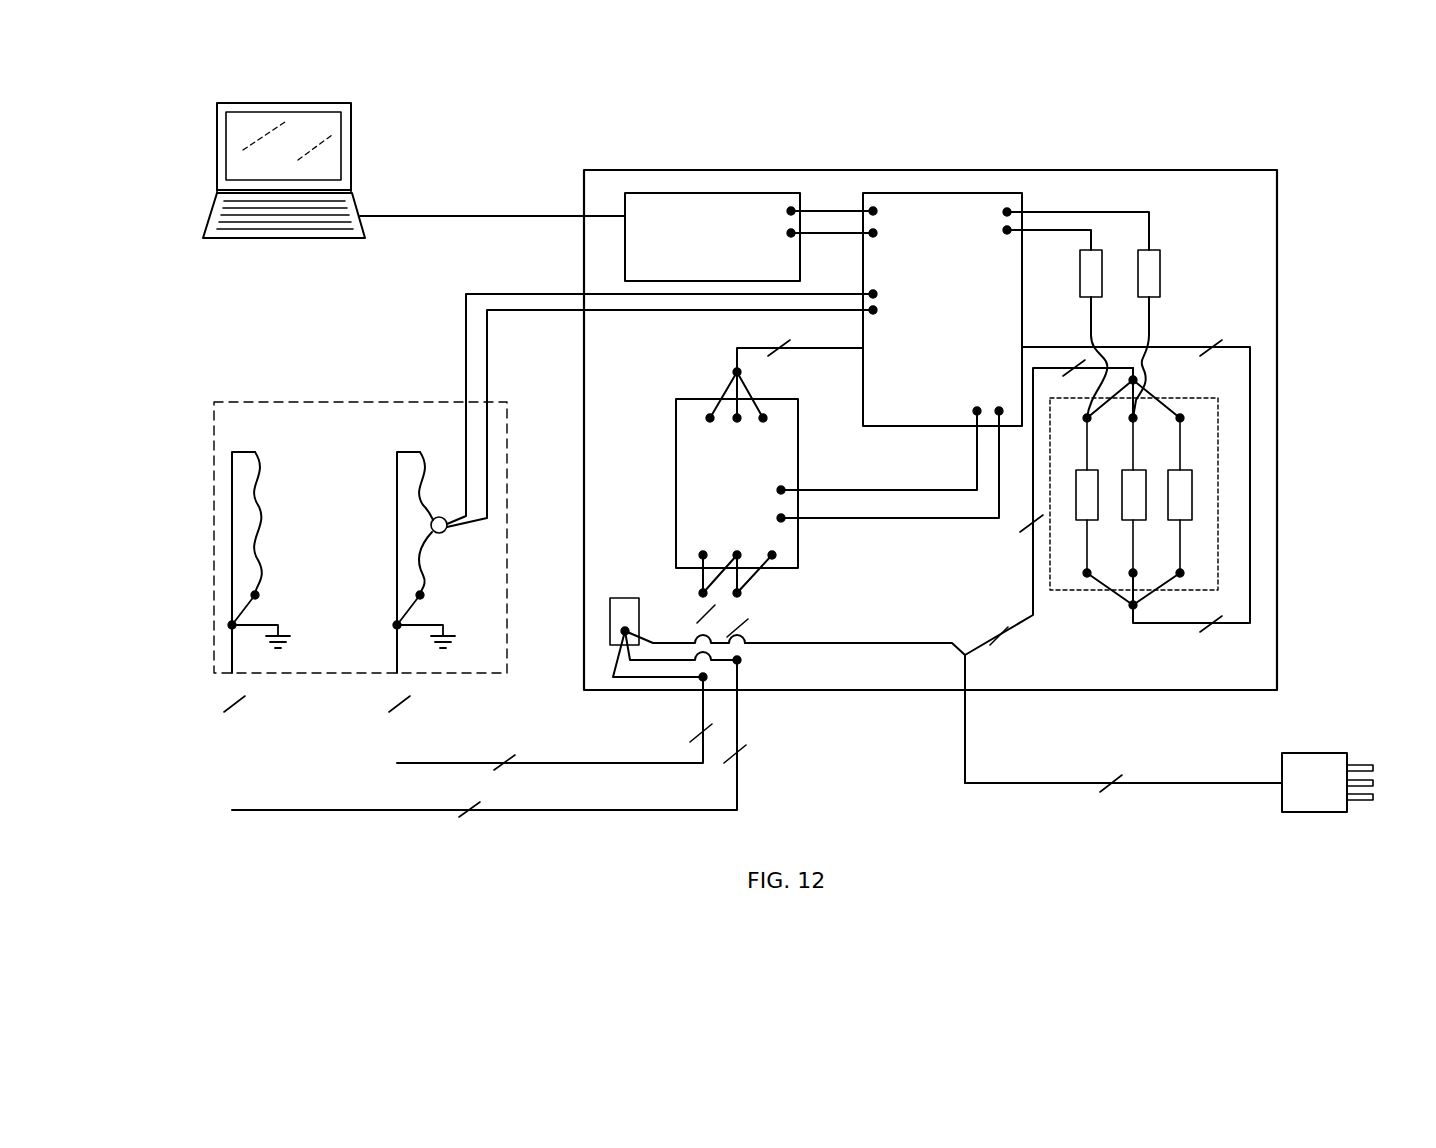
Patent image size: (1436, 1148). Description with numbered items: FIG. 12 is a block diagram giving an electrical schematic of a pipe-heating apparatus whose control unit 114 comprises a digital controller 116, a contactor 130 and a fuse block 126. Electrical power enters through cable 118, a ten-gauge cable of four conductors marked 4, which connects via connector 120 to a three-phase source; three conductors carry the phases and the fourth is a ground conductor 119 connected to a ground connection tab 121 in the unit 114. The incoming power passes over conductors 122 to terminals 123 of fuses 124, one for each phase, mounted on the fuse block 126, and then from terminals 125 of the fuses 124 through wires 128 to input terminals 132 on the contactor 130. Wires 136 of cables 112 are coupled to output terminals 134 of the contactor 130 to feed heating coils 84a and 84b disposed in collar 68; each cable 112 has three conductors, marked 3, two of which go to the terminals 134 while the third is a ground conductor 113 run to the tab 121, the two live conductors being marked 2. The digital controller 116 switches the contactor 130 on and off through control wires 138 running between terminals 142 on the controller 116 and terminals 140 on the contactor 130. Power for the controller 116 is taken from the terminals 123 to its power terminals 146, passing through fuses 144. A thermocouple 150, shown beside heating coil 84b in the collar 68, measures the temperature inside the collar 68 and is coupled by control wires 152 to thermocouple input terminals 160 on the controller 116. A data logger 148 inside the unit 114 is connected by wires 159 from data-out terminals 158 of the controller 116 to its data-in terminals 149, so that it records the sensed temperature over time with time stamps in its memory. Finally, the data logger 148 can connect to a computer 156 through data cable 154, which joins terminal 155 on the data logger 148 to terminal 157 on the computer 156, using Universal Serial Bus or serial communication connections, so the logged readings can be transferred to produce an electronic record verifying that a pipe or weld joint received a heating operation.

The computer 156 is at (354, 130).
The terminal 157 is at (358, 203).
The data cable 154 is at (478, 214).
The terminal 155 is at (612, 206).
The control unit 114 is at (1280, 262).
The data logger 148 is at (677, 226).
The data-in terminals 149 is at (784, 222).
The wires 159 is at (827, 210).
The data-out terminals 158 is at (880, 222).
The digital controller 116 is at (945, 228).
The power terminals 146 is at (1012, 218).
The fuses 144 is at (1090, 265).
The thermocouple input terminals 160 is at (880, 303).
The control wires 152 is at (530, 313).
The thermocouple 150 is at (447, 535).
The collar 68 is at (337, 402).
The heating coil 84a is at (265, 473).
The heating coil 84b is at (432, 475).
The contactor 130 is at (690, 478).
The input terminals 132 is at (720, 424).
The terminals 140 is at (776, 500).
The control wires 138 is at (890, 520).
The terminals 142 is at (988, 410).
The output terminals 134 is at (755, 560).
The wires 136 is at (745, 605).
The ground connection tab 121 is at (622, 610).
The ground conductors 113 is at (646, 670).
The ground conductor 119 is at (865, 646).
The cable 118 is at (1165, 785).
The connector 120 is at (1318, 800).
The conductors 122 is at (1033, 600).
The wires 128 is at (1255, 605).
The terminals 123 is at (1185, 420).
The fuses 124 is at (1195, 490).
The fuse block 126 is at (1198, 535).
The terminals 125 is at (1185, 573).
The cables 112 is at (575, 768).
The three-conductor cable marker 3 is at (723, 568).
The two-conductor cable marker 2 is at (724, 623).
The four-conductor cable marker 4 is at (1111, 775).